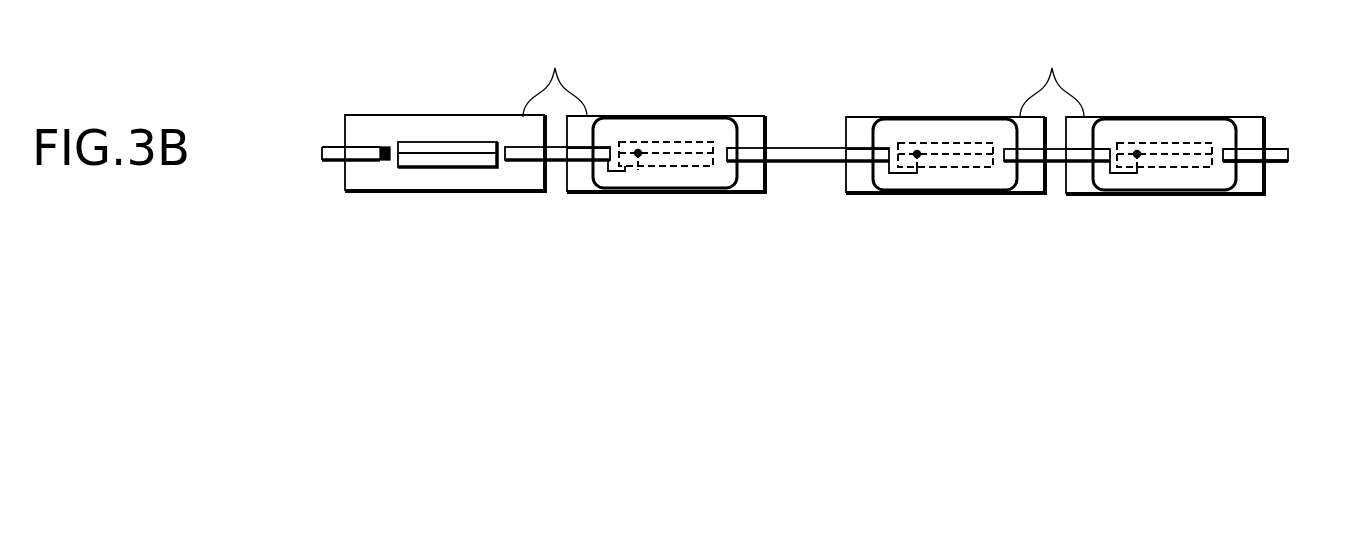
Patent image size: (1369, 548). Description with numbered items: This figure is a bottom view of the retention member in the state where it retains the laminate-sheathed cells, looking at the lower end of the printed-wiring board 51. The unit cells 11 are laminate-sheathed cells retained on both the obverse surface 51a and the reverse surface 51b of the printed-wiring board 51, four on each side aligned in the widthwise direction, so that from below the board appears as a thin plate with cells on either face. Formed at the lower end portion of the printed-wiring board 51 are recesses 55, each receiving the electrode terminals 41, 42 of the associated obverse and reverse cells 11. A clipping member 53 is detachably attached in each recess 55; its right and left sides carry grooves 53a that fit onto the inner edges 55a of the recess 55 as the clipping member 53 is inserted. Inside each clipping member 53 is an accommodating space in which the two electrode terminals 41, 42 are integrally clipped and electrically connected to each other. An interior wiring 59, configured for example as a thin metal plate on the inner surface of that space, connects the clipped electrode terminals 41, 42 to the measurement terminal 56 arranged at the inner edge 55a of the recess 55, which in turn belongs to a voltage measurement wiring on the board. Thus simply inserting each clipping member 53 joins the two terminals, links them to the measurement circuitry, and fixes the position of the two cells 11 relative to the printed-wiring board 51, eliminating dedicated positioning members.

The unit cell 11 is at (803, 75).
The electrode terminal 41 is at (445, 160).
The electrode terminal 42 is at (447, 145).
The printed-wiring board 51 is at (797, 147).
The obverse surface 51a is at (1275, 148).
The reverse surface 51b is at (1275, 162).
The clipping member 53 is at (717, 186).
The groove 53a is at (724, 148).
The recess 55 is at (395, 160).
The inner edge 55a is at (390, 148).
The measurement terminal 56 is at (372, 161).
The interior wiring 59 is at (622, 172).